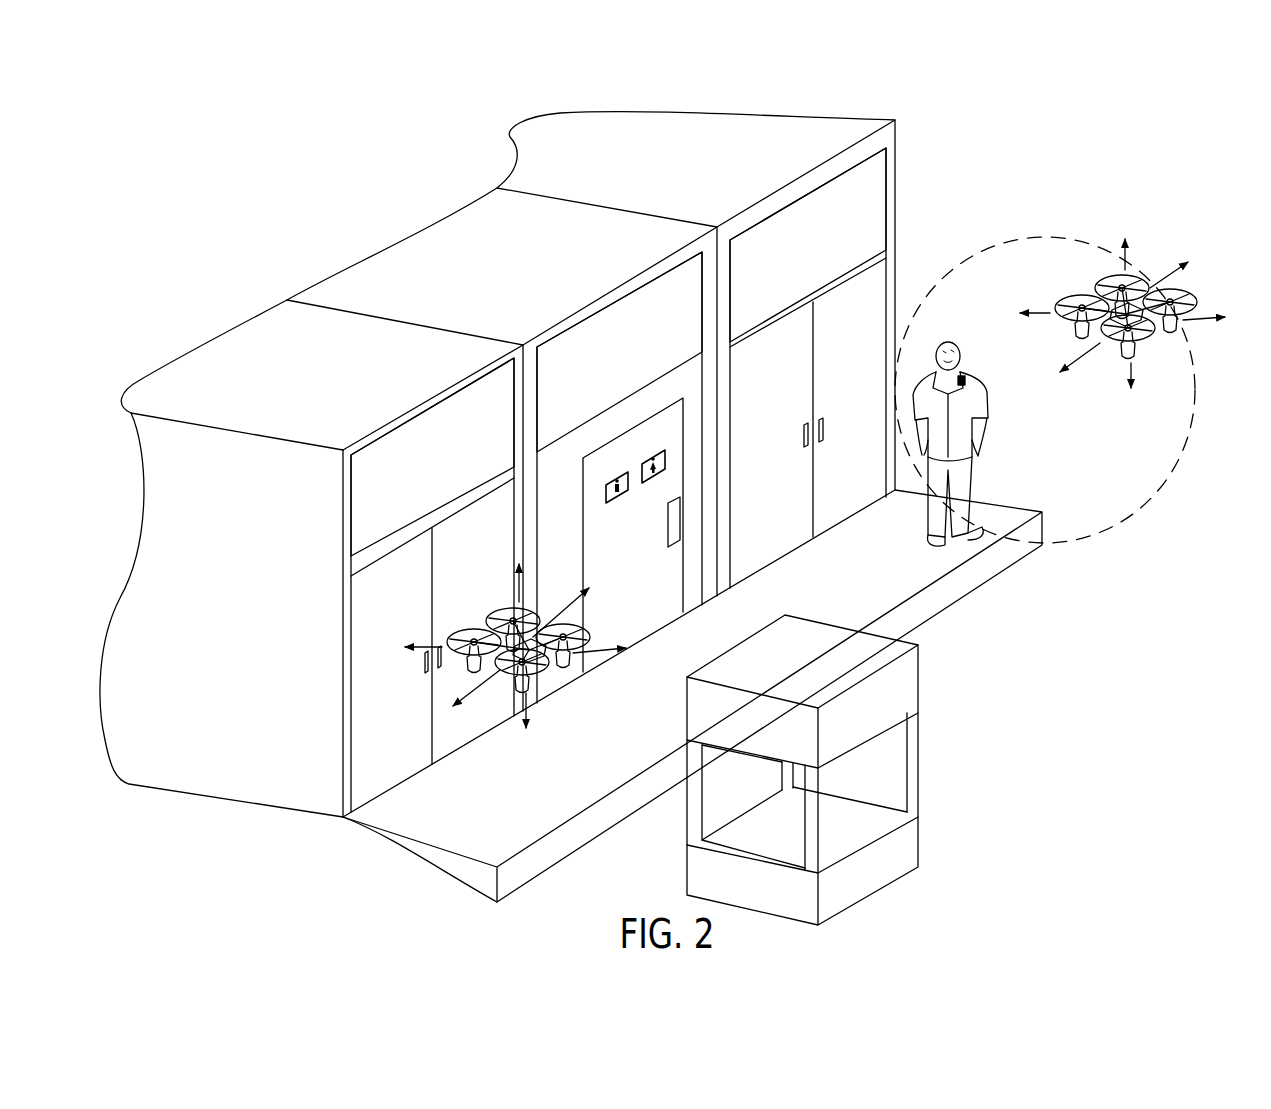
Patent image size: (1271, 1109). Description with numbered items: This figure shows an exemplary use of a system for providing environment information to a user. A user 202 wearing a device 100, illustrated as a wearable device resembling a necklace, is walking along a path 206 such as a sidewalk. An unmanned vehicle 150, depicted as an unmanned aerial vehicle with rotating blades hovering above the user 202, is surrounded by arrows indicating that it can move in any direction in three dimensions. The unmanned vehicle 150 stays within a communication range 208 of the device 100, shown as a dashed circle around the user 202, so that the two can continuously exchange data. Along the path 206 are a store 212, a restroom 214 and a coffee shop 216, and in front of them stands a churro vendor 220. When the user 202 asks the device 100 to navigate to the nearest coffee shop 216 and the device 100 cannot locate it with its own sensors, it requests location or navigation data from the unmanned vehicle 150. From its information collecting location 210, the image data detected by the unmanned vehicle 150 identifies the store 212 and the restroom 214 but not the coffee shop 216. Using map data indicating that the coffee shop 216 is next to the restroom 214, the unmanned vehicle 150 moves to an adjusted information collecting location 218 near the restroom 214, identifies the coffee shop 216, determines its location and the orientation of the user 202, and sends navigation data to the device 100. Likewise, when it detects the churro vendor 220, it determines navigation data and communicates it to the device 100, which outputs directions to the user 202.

The device 100 is at (963, 369).
The unmanned vehicle 150 is at (529, 645).
The user 202 is at (948, 340).
The path 206 is at (957, 563).
The communication range 208 is at (1165, 488).
The information collecting location 210 is at (1086, 294).
The store 212 is at (800, 186).
The restroom 214 is at (608, 300).
The coffee shop 216 is at (430, 403).
The adjusted information collecting location 218 is at (541, 666).
The churro vendor 220 is at (908, 685).